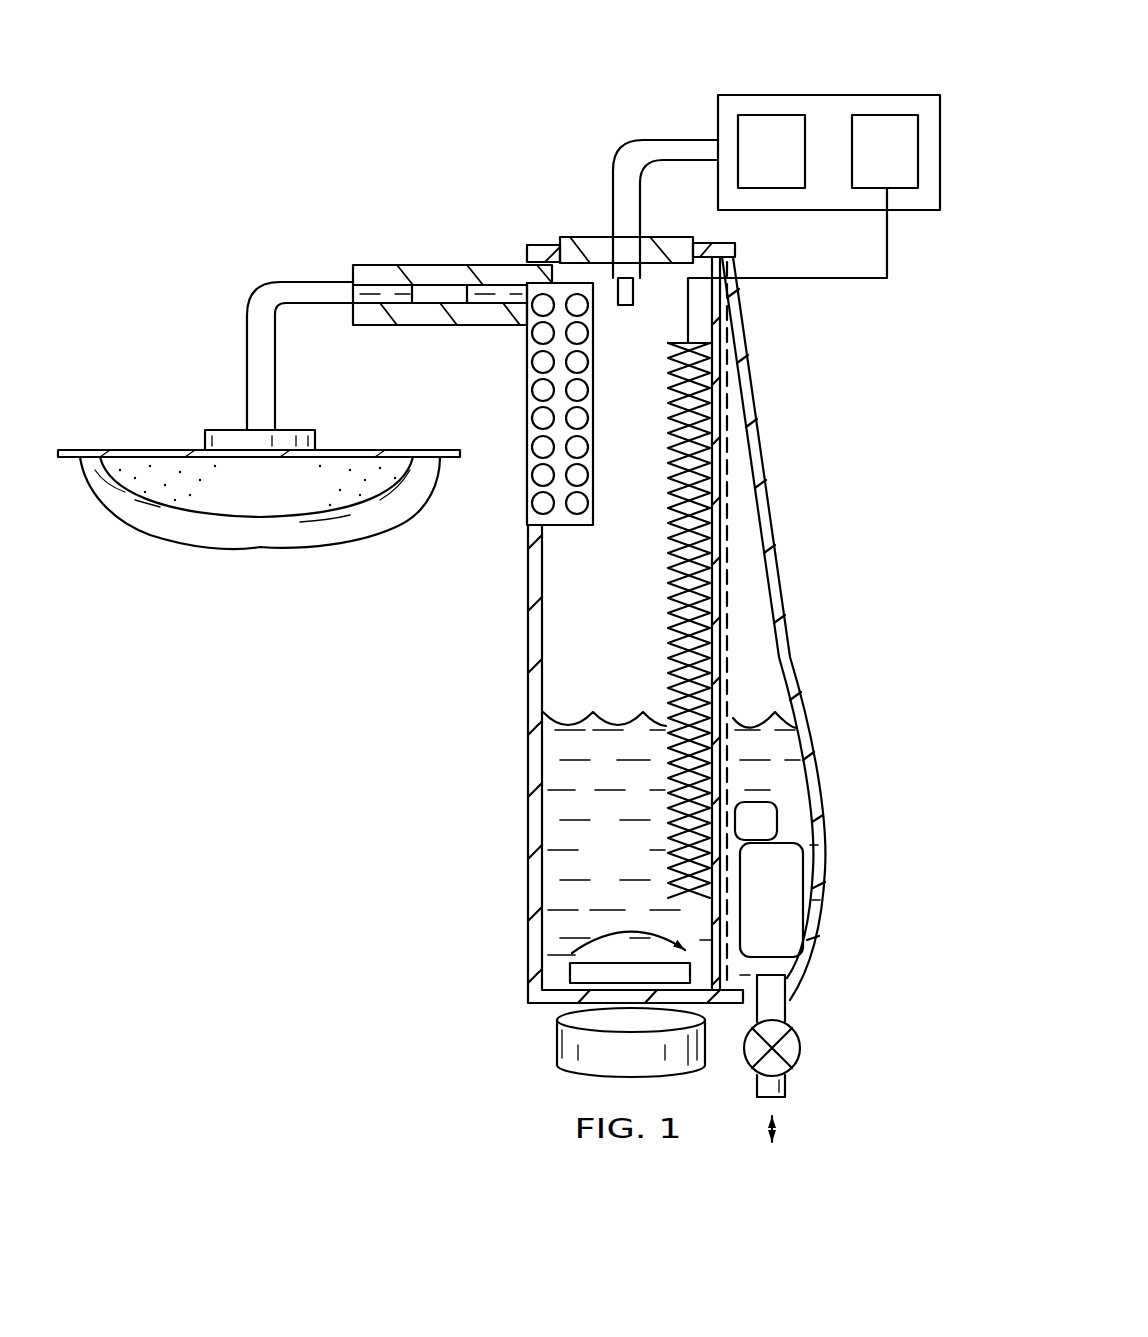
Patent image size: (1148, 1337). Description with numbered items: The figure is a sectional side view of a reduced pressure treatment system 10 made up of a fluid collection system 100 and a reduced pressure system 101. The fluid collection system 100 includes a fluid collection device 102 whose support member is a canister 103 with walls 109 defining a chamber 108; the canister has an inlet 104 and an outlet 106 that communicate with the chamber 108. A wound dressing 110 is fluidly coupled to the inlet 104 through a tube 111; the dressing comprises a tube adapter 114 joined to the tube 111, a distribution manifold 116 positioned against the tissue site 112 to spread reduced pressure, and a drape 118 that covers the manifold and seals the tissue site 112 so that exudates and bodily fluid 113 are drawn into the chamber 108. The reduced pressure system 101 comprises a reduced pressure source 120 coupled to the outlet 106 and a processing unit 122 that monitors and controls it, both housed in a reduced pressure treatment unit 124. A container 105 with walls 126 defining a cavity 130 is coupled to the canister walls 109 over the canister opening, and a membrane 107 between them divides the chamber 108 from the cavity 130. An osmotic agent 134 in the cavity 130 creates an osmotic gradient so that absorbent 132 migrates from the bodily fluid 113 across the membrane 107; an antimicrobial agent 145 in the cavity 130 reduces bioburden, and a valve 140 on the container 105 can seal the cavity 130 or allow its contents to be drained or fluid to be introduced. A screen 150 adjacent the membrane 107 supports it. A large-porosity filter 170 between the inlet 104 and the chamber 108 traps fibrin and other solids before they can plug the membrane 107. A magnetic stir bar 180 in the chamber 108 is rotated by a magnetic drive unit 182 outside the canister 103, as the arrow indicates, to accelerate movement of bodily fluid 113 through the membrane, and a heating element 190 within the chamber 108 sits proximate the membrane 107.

The reduced pressure treatment system 10 is at (452, 148).
The fluid collection system 100 is at (275, 262).
The reduced pressure system 101 is at (897, 80).
The fluid collection device 102 is at (518, 853).
The canister 103 is at (525, 703).
The inlet 104 is at (440, 263).
The container 105 is at (782, 553).
The outlet 106 is at (685, 138).
The membrane 107 is at (748, 357).
The chamber 108 is at (587, 623).
The walls 109 is at (540, 243).
The wound dressing 110 is at (178, 547).
The tube 111 is at (247, 343).
The tissue site 112 is at (260, 548).
The bodily fluid 113 is at (380, 290).
The tube adapter 114 is at (225, 430).
The distribution manifold 116 is at (240, 499).
The drape 118 is at (152, 450).
The reduced pressure source 120 is at (752, 168).
The processing unit 122 is at (865, 168).
The reduced pressure treatment unit 124 is at (828, 97).
The walls 126 is at (762, 482).
The cavity 130 is at (770, 630).
The absorbent 132 is at (605, 715).
The osmotic agent 134 is at (750, 916).
The valve 140 is at (800, 1048).
The antimicrobial agent 145 is at (777, 832).
The screen 150 is at (748, 430).
The large-porosity filter 170 is at (525, 403).
The magnetic stir bar 180 is at (572, 975).
The magnetic drive unit 182 is at (557, 1047).
The heating element 190 is at (668, 528).